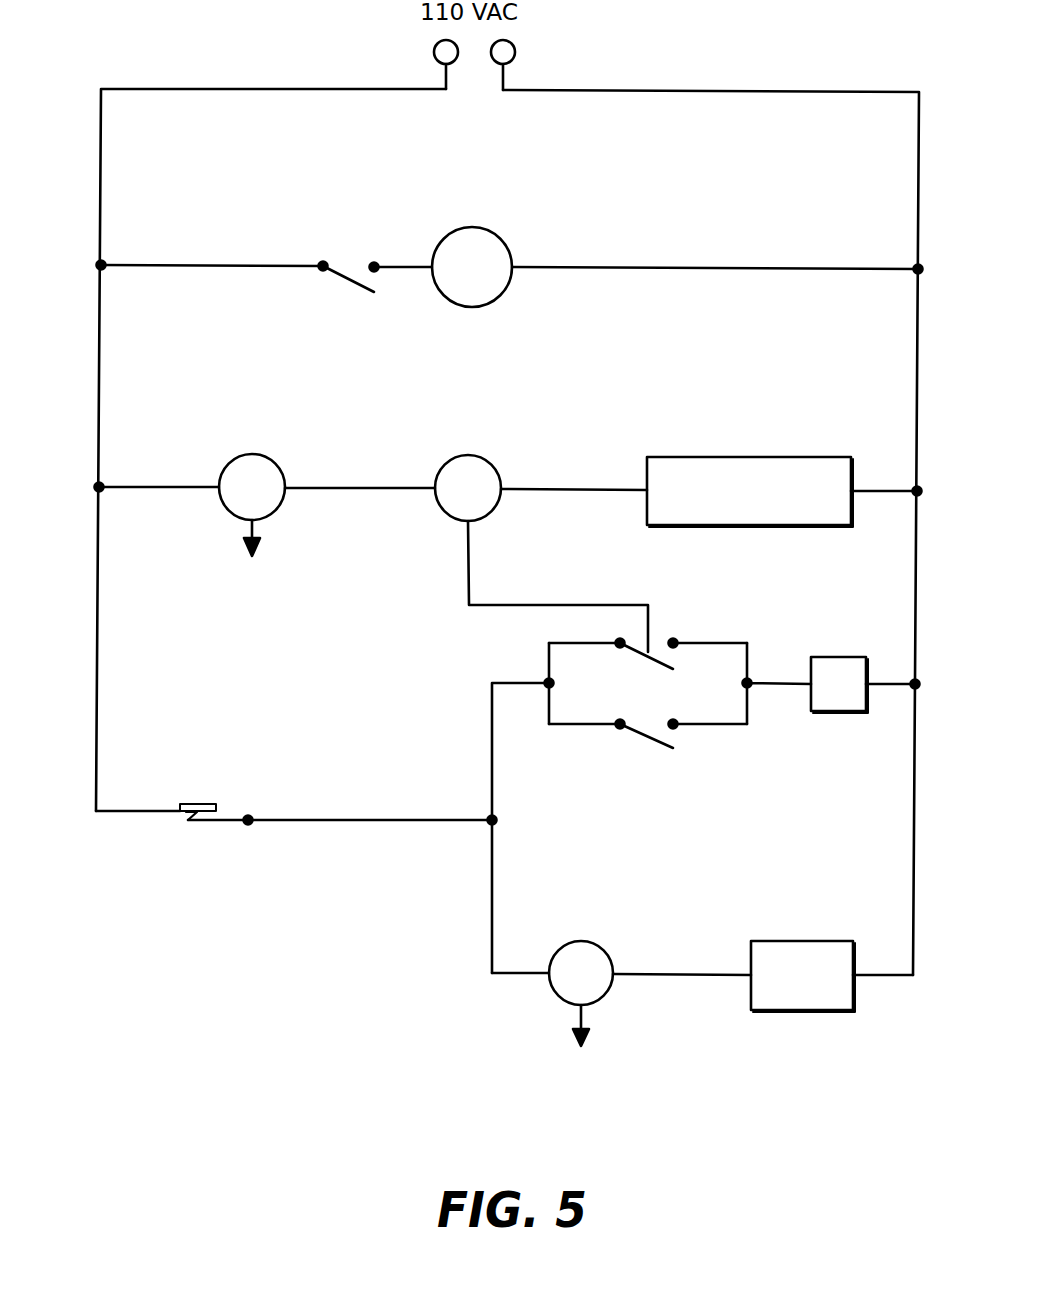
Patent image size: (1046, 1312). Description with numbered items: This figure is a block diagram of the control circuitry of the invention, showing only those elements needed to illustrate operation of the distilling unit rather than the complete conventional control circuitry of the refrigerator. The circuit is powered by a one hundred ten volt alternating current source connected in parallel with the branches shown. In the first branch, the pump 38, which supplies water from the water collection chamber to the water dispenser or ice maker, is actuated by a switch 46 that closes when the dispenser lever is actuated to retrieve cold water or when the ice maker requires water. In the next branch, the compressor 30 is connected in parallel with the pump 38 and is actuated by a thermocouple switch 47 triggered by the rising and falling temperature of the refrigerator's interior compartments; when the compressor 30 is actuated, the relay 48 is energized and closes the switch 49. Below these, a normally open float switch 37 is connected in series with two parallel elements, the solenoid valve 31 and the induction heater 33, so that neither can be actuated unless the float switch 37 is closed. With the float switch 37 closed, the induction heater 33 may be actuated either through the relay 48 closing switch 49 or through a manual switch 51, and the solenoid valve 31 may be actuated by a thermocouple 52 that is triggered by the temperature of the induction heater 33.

The compressor 30 is at (733, 457).
The solenoid valve 31 is at (777, 1012).
The induction heater 33 is at (822, 712).
The float switch 37 is at (187, 815).
The pump 38 is at (507, 250).
The switch 46 is at (347, 266).
The thermocouple switch 47 is at (230, 512).
The relay 48 is at (447, 513).
The switch 49 is at (658, 650).
The manual switch 51 is at (668, 734).
The thermocouple 52 is at (555, 993).